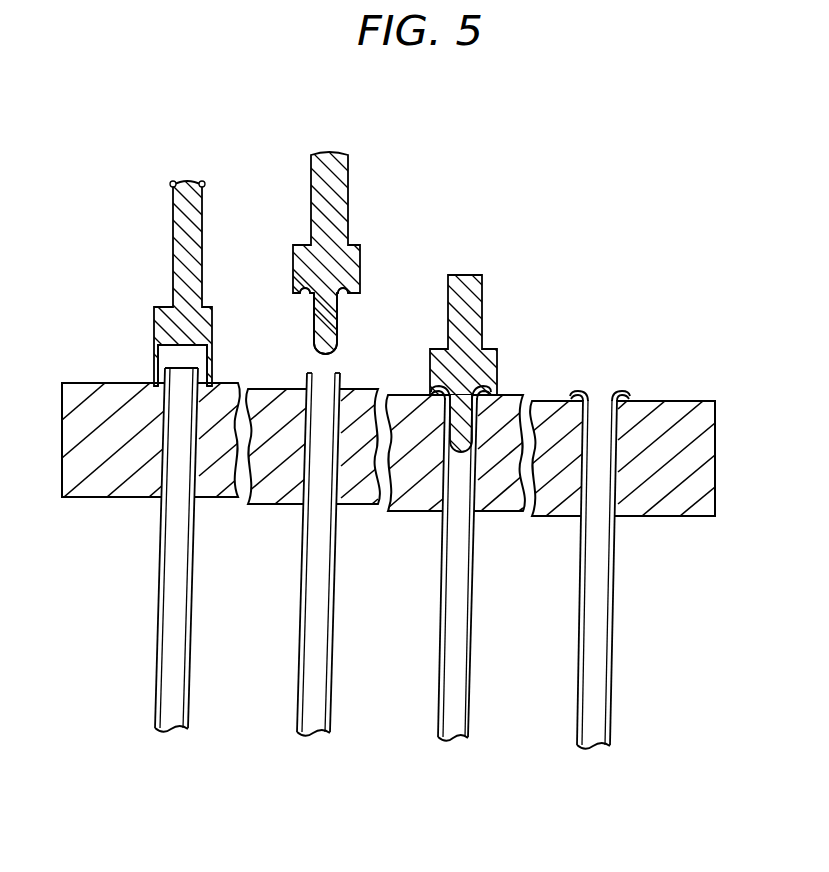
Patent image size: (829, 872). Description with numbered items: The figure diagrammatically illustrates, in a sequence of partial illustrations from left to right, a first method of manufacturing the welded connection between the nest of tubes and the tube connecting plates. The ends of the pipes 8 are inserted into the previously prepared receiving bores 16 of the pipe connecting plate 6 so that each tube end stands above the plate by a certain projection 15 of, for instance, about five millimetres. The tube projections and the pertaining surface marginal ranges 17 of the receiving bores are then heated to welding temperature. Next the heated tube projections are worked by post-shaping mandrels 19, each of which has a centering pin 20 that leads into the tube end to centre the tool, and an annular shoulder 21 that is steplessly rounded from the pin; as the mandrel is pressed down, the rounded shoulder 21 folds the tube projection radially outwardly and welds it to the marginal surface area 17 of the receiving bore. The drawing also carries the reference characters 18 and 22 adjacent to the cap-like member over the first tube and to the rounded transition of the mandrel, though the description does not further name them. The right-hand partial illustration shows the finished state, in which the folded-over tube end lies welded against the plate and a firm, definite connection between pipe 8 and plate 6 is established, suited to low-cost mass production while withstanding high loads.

The pipe connecting plate 6 is at (676, 415).
The pipe 8 is at (612, 580).
The projection 15 is at (168, 373).
The receiving bore 16 is at (160, 466).
The surface marginal range of the receiving bore 17 is at (158, 390).
The cap 18 is at (163, 327).
The post-shaping mandrel 19 is at (356, 200).
The centering pin 20 is at (322, 333).
The annular shoulder 21 is at (301, 297).
The notch 22 is at (345, 297).